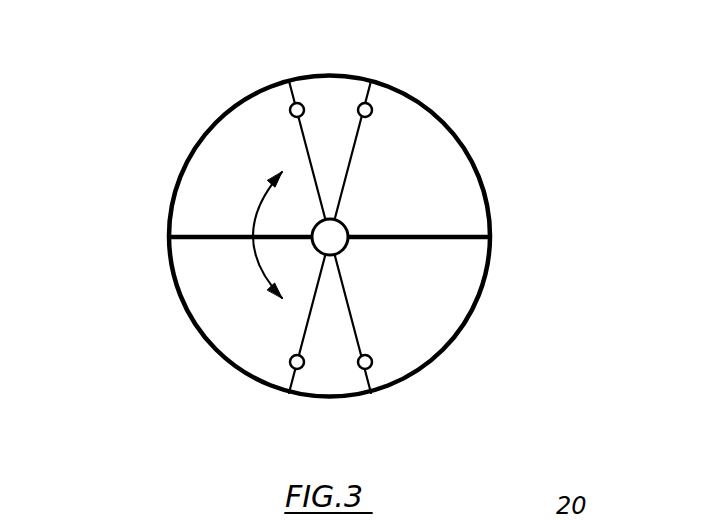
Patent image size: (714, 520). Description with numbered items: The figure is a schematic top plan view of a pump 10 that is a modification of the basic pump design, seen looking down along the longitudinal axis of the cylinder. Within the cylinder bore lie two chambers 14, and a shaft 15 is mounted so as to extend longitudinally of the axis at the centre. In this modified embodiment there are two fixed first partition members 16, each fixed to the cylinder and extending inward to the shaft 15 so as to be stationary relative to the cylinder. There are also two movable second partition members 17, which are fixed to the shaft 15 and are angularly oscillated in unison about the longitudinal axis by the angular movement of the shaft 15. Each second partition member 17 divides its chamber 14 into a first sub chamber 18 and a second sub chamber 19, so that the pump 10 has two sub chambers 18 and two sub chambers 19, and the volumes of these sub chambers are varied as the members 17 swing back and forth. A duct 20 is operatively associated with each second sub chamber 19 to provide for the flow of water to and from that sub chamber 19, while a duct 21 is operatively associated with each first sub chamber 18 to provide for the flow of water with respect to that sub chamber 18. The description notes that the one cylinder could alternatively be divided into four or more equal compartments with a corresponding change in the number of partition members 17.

The pump 10 is at (470, 110).
The chamber 14 is at (486, 190).
The shaft 15 is at (350, 226).
The first partition member 16 is at (328, 86).
The second partition member 17 is at (205, 241).
The first sub chamber 18 is at (254, 170).
The second sub chamber 19 is at (420, 145).
The duct 20 is at (373, 108).
The duct 21 is at (290, 105).